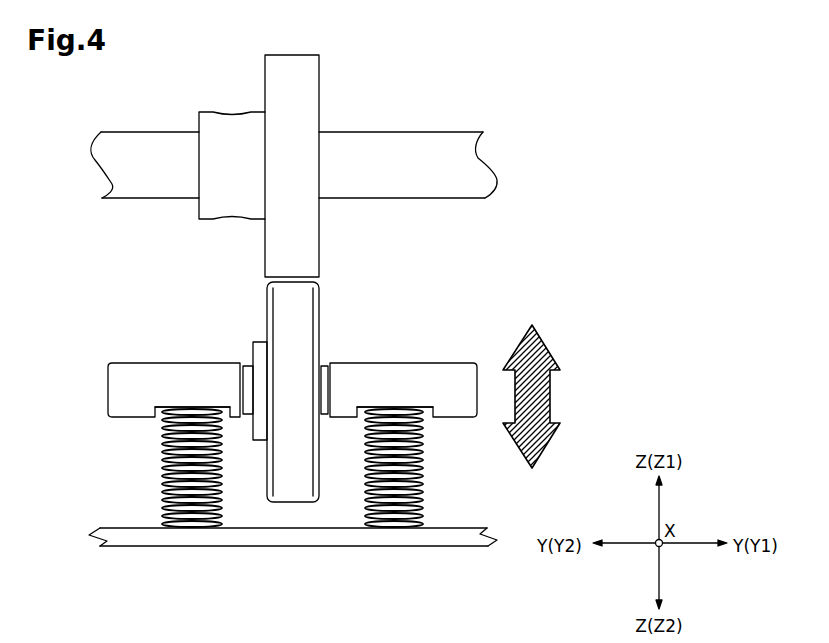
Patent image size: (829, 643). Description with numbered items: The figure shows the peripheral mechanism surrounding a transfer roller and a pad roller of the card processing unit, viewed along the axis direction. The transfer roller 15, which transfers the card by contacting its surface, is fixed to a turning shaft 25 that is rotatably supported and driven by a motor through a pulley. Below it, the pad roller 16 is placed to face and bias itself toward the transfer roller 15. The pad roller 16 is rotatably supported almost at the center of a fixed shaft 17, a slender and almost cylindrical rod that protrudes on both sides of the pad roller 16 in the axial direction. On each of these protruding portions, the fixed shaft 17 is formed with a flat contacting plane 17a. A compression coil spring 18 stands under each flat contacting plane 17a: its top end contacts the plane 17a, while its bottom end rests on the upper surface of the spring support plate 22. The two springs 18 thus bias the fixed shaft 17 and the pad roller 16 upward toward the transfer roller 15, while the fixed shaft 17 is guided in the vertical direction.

The transfer roller 15 is at (319, 69).
The pad roller 16 is at (319, 305).
The fixed shaft 17 is at (445, 363).
The flat contacting plane 17a is at (156, 410).
The compression coil spring 18 is at (161, 480).
The spring support plate 22 is at (288, 547).
The turning shaft 25 is at (452, 131).